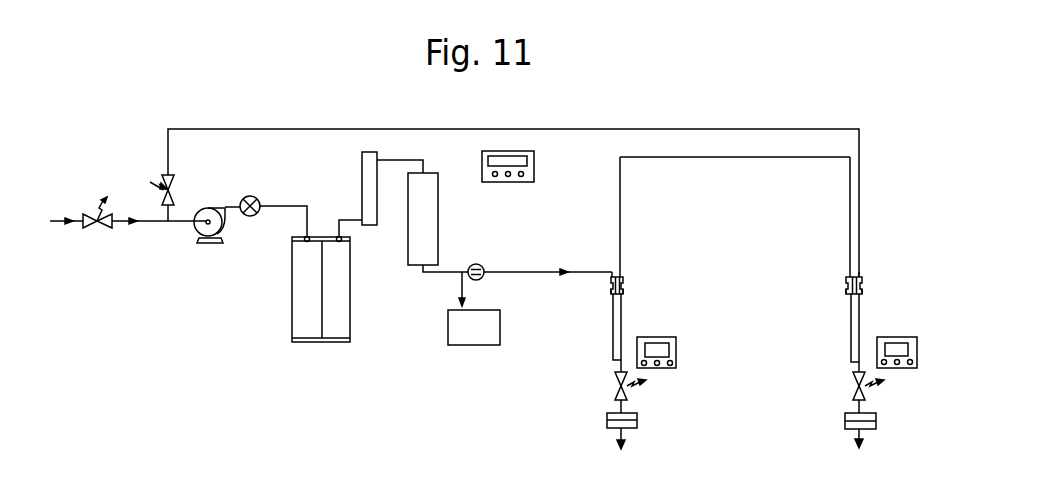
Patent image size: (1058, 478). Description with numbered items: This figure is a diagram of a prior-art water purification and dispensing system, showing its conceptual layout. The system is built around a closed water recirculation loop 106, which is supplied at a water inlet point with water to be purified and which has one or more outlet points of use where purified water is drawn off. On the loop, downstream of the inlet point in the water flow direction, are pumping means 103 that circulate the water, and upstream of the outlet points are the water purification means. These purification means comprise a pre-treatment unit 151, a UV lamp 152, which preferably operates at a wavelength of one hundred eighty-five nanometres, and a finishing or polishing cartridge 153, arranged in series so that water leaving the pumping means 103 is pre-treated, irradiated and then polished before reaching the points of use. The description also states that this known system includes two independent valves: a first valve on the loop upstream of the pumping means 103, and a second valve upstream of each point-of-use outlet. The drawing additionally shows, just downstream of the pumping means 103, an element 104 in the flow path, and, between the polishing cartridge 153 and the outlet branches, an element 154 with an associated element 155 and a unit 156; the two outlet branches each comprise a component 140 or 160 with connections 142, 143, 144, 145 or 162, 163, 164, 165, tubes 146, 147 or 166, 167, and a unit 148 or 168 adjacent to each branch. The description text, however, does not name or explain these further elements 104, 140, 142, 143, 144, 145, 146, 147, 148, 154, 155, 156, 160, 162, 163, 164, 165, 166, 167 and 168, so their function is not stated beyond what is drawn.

The pumping means 103 is at (206, 245).
The flow meter 104 is at (250, 216).
The closed water recirculation loop 106 is at (267, 128).
The connector 140 is at (624, 285).
The first inlet port 142 is at (608, 280).
The first outlet port 143 is at (609, 290).
The second inlet port 144 is at (624, 281).
The second outlet port 145 is at (624, 291).
The outer tube 146 is at (613, 330).
The inner tube 147 is at (623, 324).
The controller 148 is at (676, 355).
The pre-treatment unit 151 is at (302, 320).
The UV lamp 152 is at (365, 173).
The finishing or polishing cartridge 153 is at (433, 223).
The sensor 154 is at (479, 263).
The waste container 155 is at (448, 332).
The controller 156 is at (534, 160).
The connector 160 is at (863, 286).
The first inlet port 162 is at (846, 283).
The first outlet port 163 is at (847, 291).
The second inlet port 164 is at (861, 281).
The second outlet port 165 is at (863, 292).
The outer tube 166 is at (851, 333).
The inner tube 167 is at (861, 324).
The controller 168 is at (918, 350).